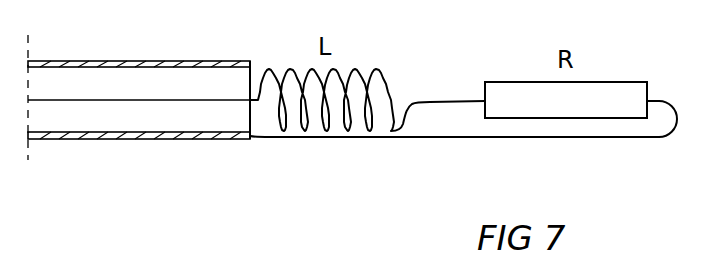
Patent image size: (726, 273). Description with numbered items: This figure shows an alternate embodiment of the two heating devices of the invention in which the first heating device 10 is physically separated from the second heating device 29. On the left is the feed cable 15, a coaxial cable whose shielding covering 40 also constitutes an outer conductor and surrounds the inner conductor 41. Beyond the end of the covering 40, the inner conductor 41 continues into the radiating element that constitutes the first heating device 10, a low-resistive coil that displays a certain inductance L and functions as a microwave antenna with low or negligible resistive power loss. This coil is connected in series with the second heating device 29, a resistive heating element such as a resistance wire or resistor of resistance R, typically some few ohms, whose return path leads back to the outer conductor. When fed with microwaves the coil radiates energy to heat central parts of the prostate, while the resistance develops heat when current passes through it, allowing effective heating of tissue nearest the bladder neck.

The shielding covering 40 is at (59, 64).
The feed cable 15 is at (177, 82).
The inner conductor 41 is at (207, 103).
The first heating device 10 is at (375, 72).
The second heating device 29 is at (610, 93).